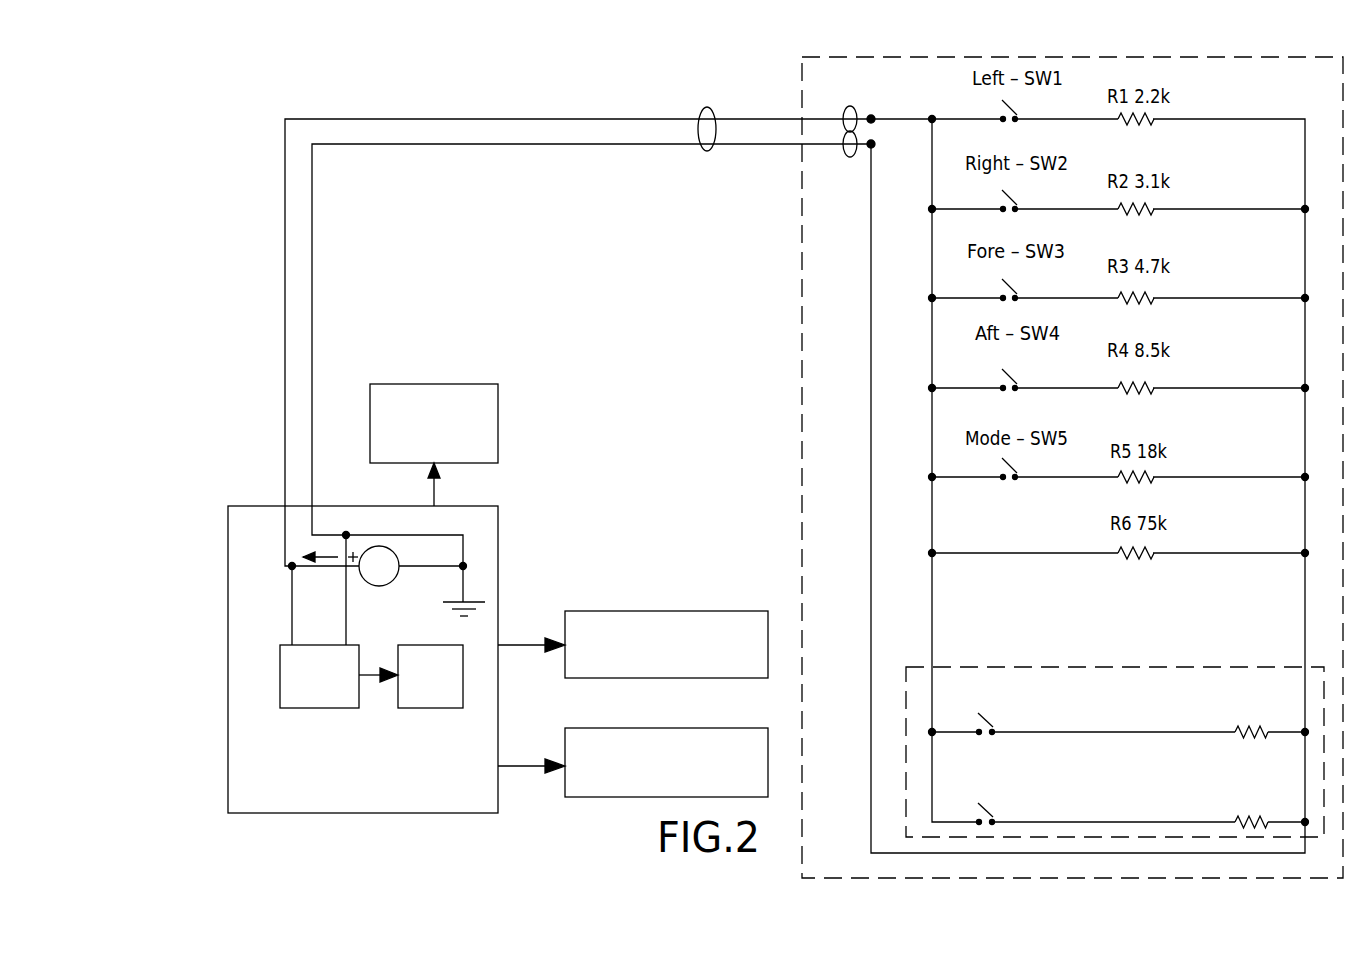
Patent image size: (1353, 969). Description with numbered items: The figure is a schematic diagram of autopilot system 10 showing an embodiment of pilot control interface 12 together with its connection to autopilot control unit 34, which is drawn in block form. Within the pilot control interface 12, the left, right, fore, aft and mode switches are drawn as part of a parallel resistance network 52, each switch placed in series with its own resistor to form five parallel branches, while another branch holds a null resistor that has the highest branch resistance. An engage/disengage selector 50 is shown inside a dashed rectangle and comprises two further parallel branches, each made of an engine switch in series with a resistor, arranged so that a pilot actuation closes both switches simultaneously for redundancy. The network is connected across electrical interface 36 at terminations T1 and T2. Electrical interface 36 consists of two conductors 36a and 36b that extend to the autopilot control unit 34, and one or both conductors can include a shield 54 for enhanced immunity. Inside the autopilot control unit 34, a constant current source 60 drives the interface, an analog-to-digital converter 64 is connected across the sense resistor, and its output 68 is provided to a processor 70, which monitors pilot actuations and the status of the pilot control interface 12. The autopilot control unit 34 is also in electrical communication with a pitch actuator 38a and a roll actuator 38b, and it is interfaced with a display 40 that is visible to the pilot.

The autopilot system 10 is at (665, 92).
The pilot control interface 12 is at (802, 342).
The autopilot control unit 34 is at (498, 551).
The electrical interface 36 is at (705, 151).
The conductor 36a is at (463, 119).
The conductor 36b is at (463, 144).
The pitch actuator 38a is at (673, 611).
The roll actuator 38b is at (607, 797).
The display 40 is at (498, 415).
The engage/disengage selector 50 is at (1088, 667).
The parallel resistance network 52 is at (895, 424).
The shield 54 is at (843, 116).
The constant current source 60 is at (378, 546).
The analog-to-digital converter 64 is at (280, 672).
The output 68 is at (375, 670).
The processor 70 is at (463, 678).
The termination T1 is at (876, 119).
The termination T2 is at (874, 150).